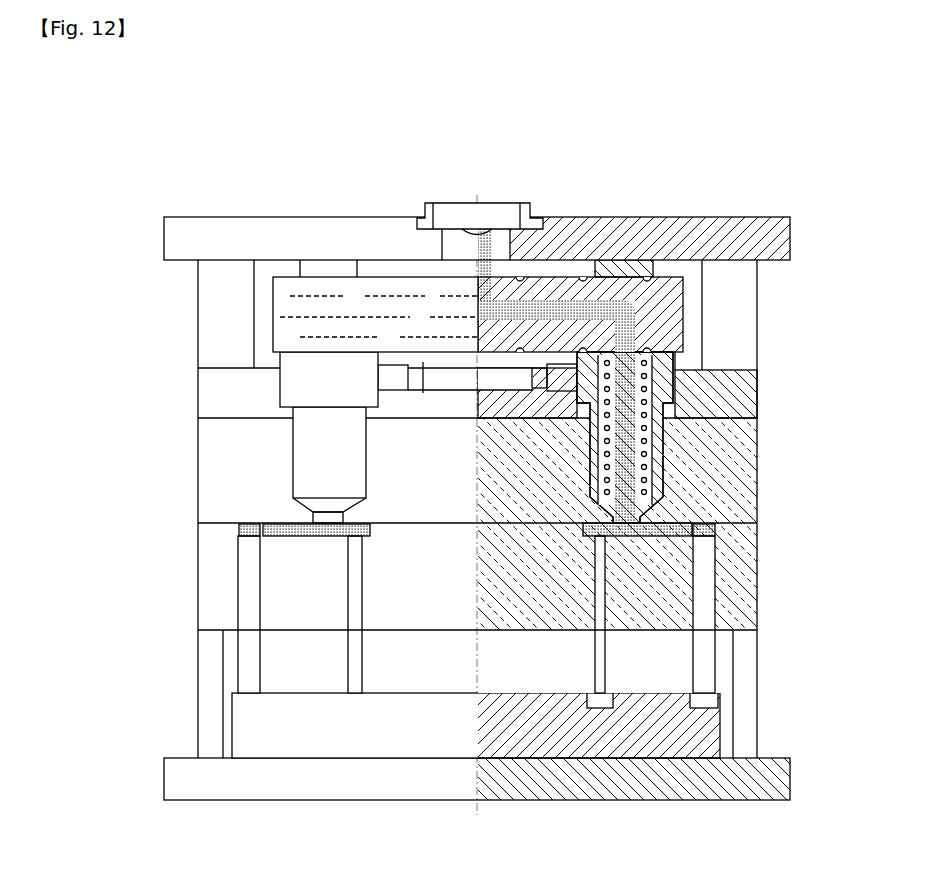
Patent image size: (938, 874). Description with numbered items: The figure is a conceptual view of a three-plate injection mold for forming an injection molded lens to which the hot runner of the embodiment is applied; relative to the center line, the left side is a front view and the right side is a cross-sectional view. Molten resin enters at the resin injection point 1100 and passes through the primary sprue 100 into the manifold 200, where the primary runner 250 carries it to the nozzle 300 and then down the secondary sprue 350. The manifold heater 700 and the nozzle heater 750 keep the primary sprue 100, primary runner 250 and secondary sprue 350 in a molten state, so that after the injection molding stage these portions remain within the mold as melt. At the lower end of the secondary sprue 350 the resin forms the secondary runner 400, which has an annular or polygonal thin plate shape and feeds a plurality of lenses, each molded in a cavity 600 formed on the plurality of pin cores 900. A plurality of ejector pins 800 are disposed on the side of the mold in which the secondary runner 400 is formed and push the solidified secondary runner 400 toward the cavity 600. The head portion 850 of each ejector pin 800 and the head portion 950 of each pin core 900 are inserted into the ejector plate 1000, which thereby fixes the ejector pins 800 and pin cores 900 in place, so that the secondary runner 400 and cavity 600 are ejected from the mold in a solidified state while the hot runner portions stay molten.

The primary sprue 100 is at (490, 300).
The resin injection point 1100 is at (458, 202).
The manifold 200 is at (323, 306).
The primary runner 250 is at (600, 317).
The manifold heater 700 is at (683, 343).
The nozzle heater 750 is at (653, 400).
The secondary sprue 350 is at (625, 437).
The nozzle 300 is at (322, 465).
The cavity 600 is at (250, 542).
The secondary runner 400 is at (322, 532).
The pin cores 900 is at (250, 642).
The ejector pins 800 is at (355, 673).
The head portion of the ejector pin 850 is at (603, 708).
The head portion of the pin core 950 is at (705, 708).
The ejector plate 1000 is at (435, 733).